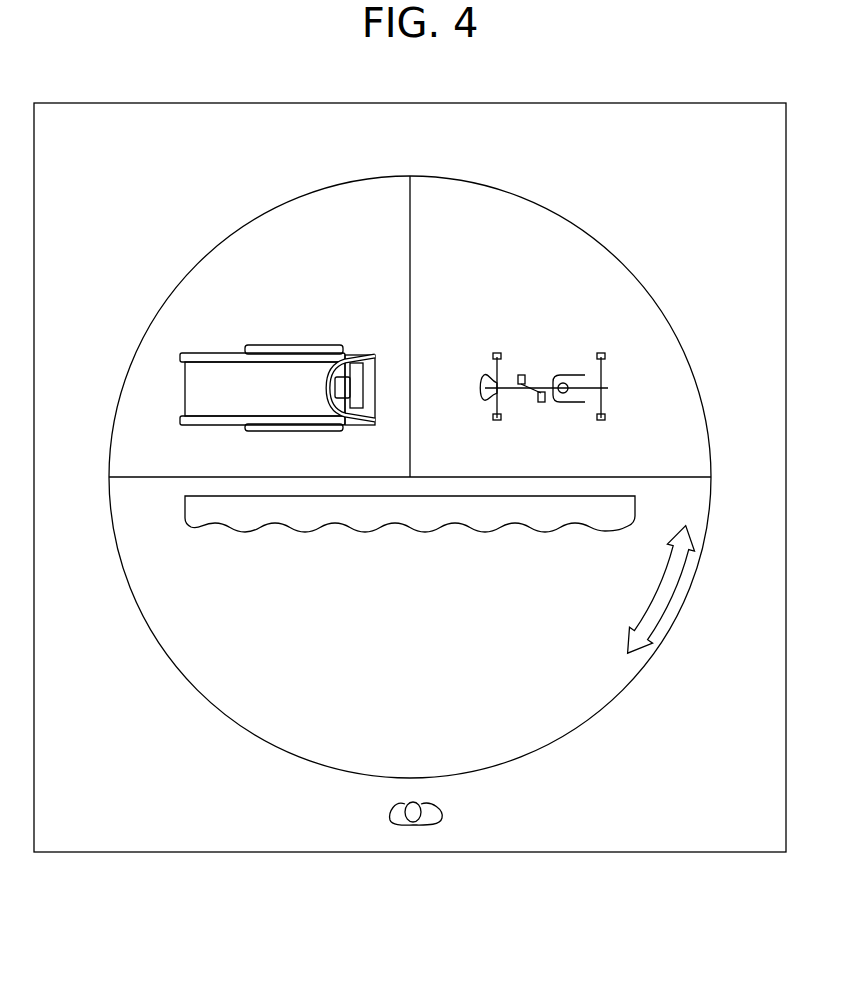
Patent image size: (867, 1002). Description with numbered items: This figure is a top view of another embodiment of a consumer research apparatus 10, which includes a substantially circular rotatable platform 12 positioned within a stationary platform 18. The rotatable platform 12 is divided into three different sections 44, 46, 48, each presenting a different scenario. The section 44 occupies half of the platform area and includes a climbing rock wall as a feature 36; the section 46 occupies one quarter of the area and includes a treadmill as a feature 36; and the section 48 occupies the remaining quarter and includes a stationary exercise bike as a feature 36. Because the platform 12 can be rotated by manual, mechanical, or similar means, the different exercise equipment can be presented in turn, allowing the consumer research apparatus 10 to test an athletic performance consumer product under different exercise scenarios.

The consumer research apparatus 10 is at (669, 51).
The rotatable platform 12 is at (583, 227).
The stationary platform 18 is at (252, 135).
The feature 36 is at (293, 373).
The section 44 is at (556, 700).
The section 46 is at (232, 280).
The section 48 is at (502, 228).